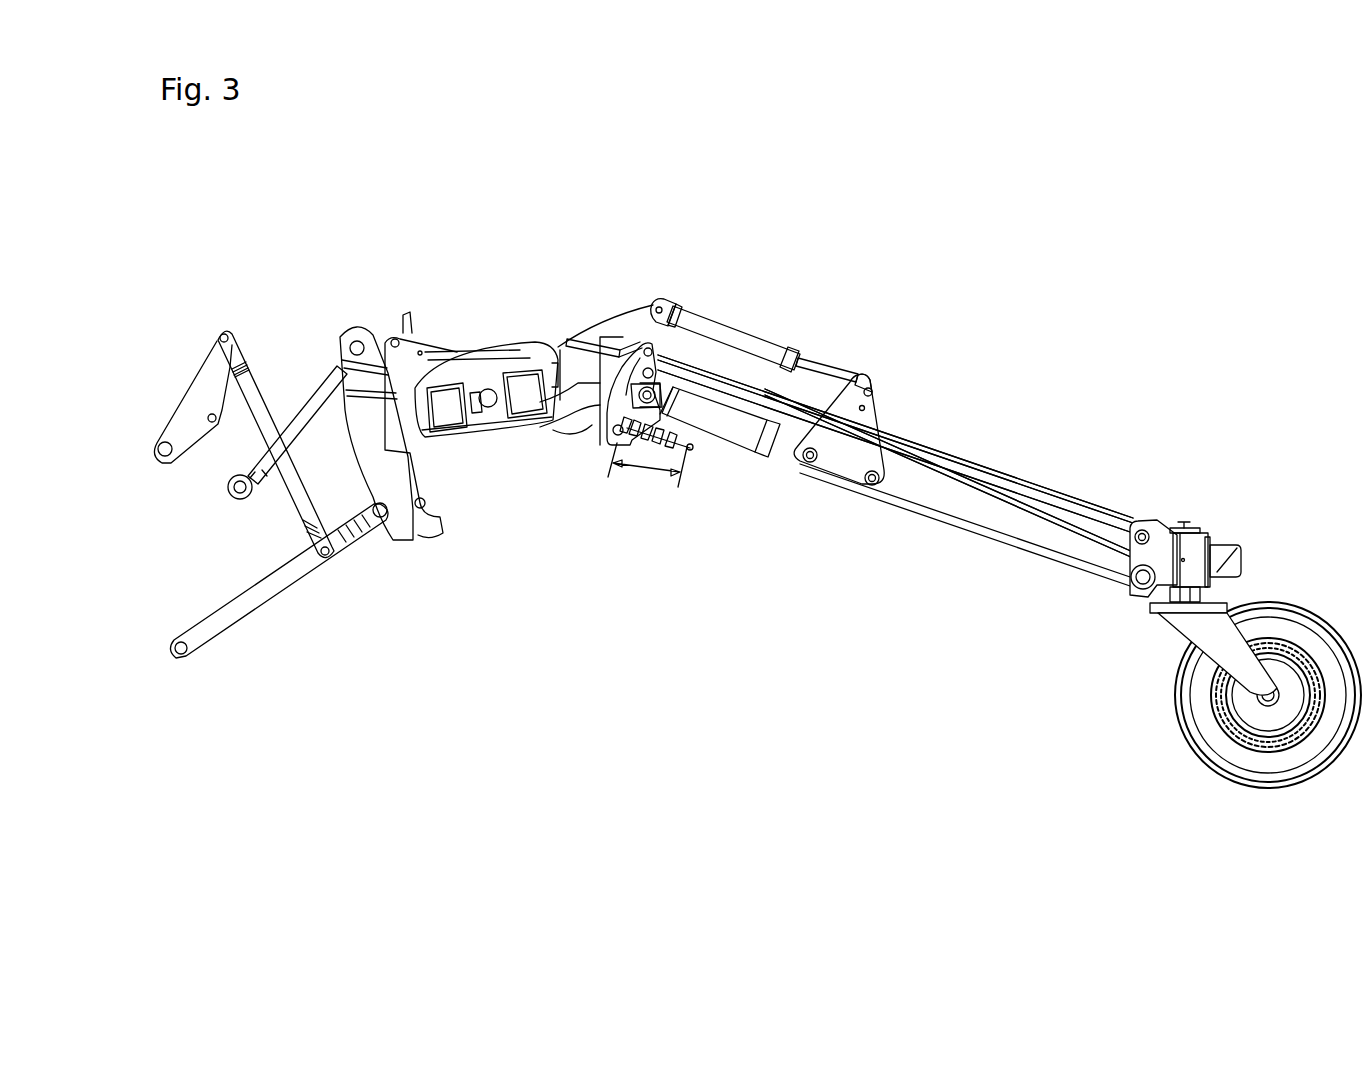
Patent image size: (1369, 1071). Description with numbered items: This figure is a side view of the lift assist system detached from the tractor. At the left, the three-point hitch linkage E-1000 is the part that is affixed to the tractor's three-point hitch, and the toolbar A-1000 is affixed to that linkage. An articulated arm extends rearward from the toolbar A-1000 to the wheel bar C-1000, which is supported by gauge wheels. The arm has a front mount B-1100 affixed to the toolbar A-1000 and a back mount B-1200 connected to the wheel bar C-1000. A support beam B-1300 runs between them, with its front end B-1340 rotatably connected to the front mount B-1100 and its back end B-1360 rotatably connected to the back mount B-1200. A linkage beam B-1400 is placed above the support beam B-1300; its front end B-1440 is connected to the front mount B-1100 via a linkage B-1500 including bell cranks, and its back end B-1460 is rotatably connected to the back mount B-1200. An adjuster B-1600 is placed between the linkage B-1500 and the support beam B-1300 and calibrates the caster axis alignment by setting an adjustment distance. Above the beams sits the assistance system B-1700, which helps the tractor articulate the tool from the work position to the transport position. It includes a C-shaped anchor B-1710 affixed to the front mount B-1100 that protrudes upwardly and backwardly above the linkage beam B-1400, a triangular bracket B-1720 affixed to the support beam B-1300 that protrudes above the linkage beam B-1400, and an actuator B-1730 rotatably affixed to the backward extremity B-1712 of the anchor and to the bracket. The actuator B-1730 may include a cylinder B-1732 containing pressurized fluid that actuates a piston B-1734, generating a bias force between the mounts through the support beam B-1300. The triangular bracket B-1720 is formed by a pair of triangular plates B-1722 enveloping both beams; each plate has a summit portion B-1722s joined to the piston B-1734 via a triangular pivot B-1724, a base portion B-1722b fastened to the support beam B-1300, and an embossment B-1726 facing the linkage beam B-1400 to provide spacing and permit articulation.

The three-point hitch linkage E-1000 is at (375, 308).
The toolbar A-1000 is at (540, 347).
The front mount B-1100 is at (553, 343).
The linkage B-1500 is at (580, 440).
The C-shaped anchor B-1710 is at (593, 323).
The backward extremity B-1712 is at (637, 300).
The front end of the linkage beam B-1440 is at (652, 350).
The adjuster B-1600 is at (687, 490).
The assistance system B-1700 is at (967, 287).
The actuator B-1730 is at (865, 340).
The cylinder B-1732 is at (680, 307).
The piston B-1734 is at (800, 358).
The triangular bracket B-1720 is at (887, 507).
The front end of the support beam B-1340 is at (733, 450).
The triangular plate B-1722 is at (880, 412).
The summit portion B-1722s is at (868, 378).
The triangular pivot B-1724 is at (876, 396).
The embossment B-1726 is at (880, 434).
The base portion B-1722b is at (878, 503).
The linkage beam B-1400 is at (990, 468).
The support beam B-1300 is at (983, 527).
The back end of the linkage beam B-1460 is at (1128, 520).
The back mount B-1200 is at (1187, 525).
The wheel bar C-1000 is at (1230, 542).
The back end of the support beam B-1360 is at (1145, 602).